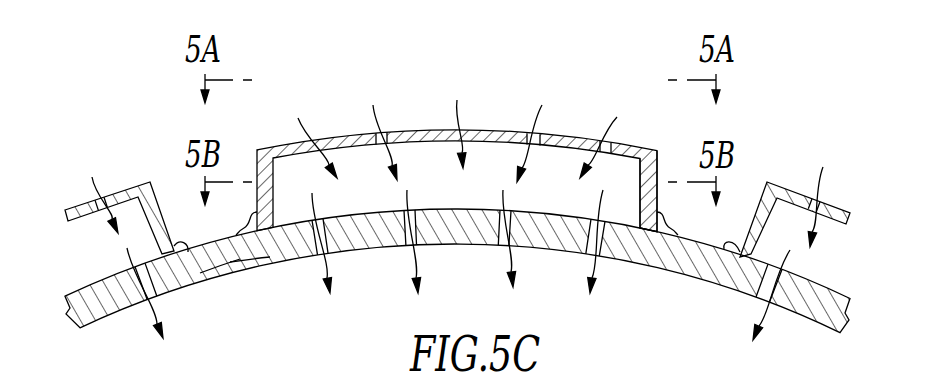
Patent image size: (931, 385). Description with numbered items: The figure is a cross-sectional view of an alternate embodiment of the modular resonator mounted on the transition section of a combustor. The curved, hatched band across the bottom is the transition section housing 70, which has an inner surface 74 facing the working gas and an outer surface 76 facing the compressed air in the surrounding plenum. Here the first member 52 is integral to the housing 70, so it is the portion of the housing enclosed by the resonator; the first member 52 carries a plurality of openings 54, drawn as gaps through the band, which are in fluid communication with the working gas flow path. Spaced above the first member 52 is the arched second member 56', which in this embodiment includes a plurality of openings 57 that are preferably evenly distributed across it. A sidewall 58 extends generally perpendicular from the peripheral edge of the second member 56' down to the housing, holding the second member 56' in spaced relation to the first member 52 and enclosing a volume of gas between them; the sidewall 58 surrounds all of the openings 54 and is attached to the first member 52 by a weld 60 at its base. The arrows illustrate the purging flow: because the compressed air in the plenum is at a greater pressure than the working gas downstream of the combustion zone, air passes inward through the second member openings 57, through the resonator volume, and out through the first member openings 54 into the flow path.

The first member 52 is at (457, 271).
The openings 54 is at (583, 238).
The second member 56' is at (457, 147).
The second member openings 57 is at (458, 101).
The sidewall 58 is at (658, 172).
The weld 60 is at (250, 226).
The housing 70 is at (250, 268).
The inner surface 74 is at (222, 283).
The outer surface 76 is at (218, 239).